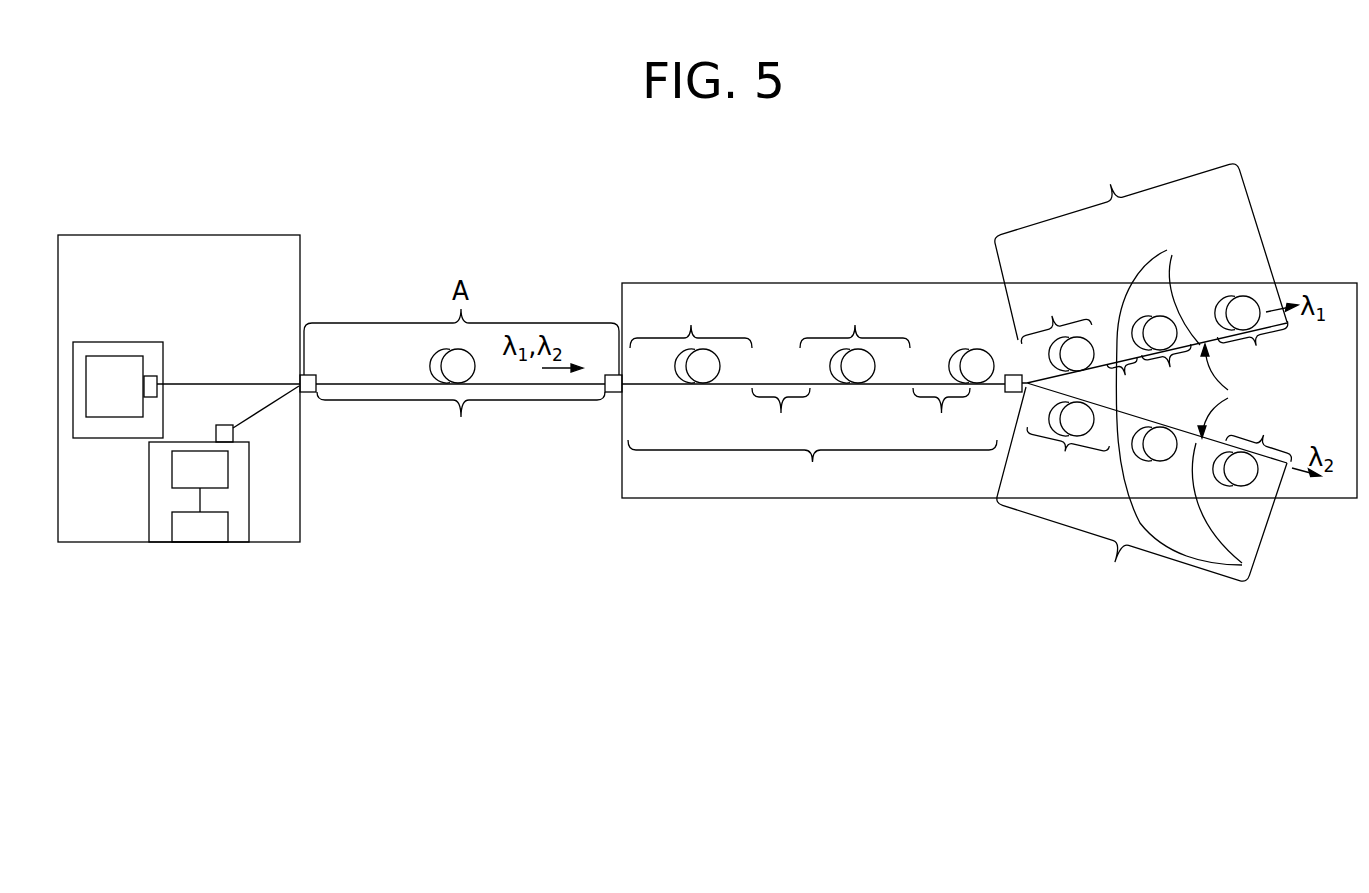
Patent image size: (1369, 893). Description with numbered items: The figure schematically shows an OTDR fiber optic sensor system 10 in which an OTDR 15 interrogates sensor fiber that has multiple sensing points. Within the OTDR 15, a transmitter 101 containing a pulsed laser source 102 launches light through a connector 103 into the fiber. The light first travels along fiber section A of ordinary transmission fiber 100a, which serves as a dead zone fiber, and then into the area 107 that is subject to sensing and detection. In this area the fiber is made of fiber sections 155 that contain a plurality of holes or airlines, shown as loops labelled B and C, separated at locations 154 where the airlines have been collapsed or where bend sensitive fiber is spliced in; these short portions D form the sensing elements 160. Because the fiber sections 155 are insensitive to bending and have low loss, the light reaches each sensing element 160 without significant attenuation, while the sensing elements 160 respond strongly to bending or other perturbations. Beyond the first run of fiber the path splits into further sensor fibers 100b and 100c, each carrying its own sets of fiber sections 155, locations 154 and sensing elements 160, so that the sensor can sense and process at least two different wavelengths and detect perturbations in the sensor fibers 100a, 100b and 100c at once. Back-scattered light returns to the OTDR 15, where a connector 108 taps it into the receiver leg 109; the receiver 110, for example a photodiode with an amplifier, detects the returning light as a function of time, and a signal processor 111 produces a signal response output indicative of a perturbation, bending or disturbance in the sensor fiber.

The OTDR based sensor system 10 is at (536, 256).
The OTDR 15 is at (178, 235).
The transmitter 101 is at (88, 342).
The pulsed laser source 102 is at (118, 345).
The connector 103 is at (157, 375).
The area subject to sensing/detection 107 is at (765, 283).
The connector 108 is at (233, 432).
The receiver leg 109 is at (149, 481).
The receiver 110 is at (228, 469).
The signal processor 111 is at (228, 527).
The sensor fiber / transmission fiber 100a is at (722, 403).
The sensor fiber 100b is at (1142, 493).
The sensor fiber 100c is at (1141, 246).
The locations 154 is at (1009, 396).
The fiber sections 155 is at (866, 387).
The sensing element 160 is at (1275, 577).